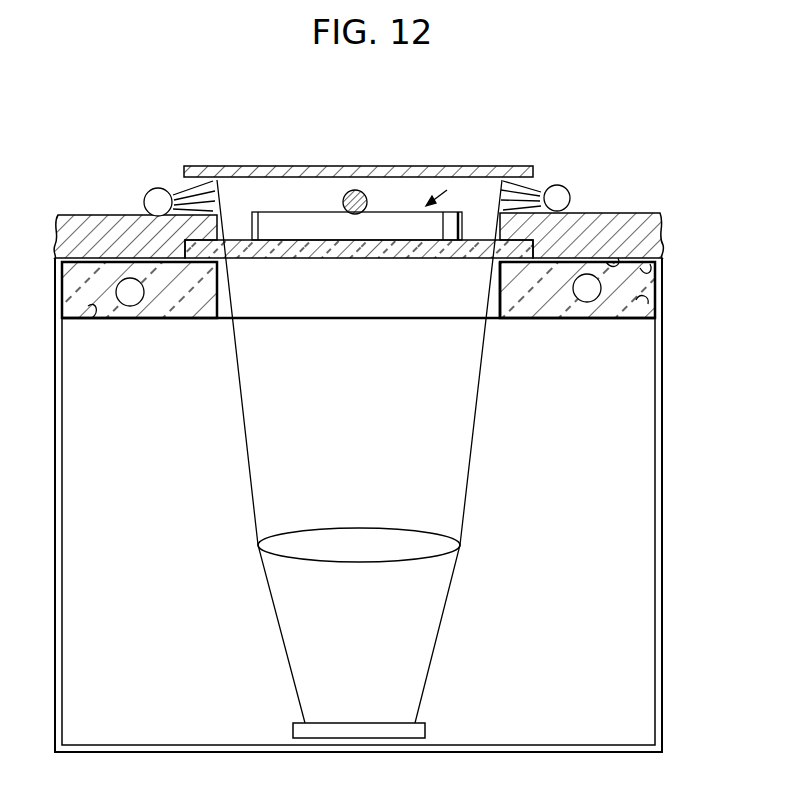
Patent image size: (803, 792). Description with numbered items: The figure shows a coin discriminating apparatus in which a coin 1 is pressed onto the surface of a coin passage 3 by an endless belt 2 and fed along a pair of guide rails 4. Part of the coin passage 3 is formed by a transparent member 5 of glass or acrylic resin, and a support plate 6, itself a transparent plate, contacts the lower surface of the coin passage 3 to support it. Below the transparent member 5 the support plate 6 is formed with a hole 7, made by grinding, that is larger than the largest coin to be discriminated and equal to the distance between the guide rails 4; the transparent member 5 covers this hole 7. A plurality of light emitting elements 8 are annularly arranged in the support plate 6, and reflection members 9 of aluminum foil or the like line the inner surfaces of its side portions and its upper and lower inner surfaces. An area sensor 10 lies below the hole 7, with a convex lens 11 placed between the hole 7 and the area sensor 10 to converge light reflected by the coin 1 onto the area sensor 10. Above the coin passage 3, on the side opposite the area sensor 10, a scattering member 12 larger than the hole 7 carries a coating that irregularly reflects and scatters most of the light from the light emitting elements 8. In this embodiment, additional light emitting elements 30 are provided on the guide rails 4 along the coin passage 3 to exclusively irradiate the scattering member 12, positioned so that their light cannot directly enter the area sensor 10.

The coin 1 is at (382, 222).
The endless belt 2 is at (342, 190).
The coin passage 3 is at (447, 190).
The guide rails 4 is at (105, 233).
The transparent member 5 is at (337, 258).
The support plate 6 is at (187, 312).
The hole 7 is at (497, 293).
The light emitting elements 8 is at (129, 295).
The reflection members 9 is at (95, 268).
The area sensor 10 is at (420, 730).
The convex lens 11 is at (427, 550).
The scattering member 12 is at (231, 166).
The light emitting elements 30 is at (158, 188).